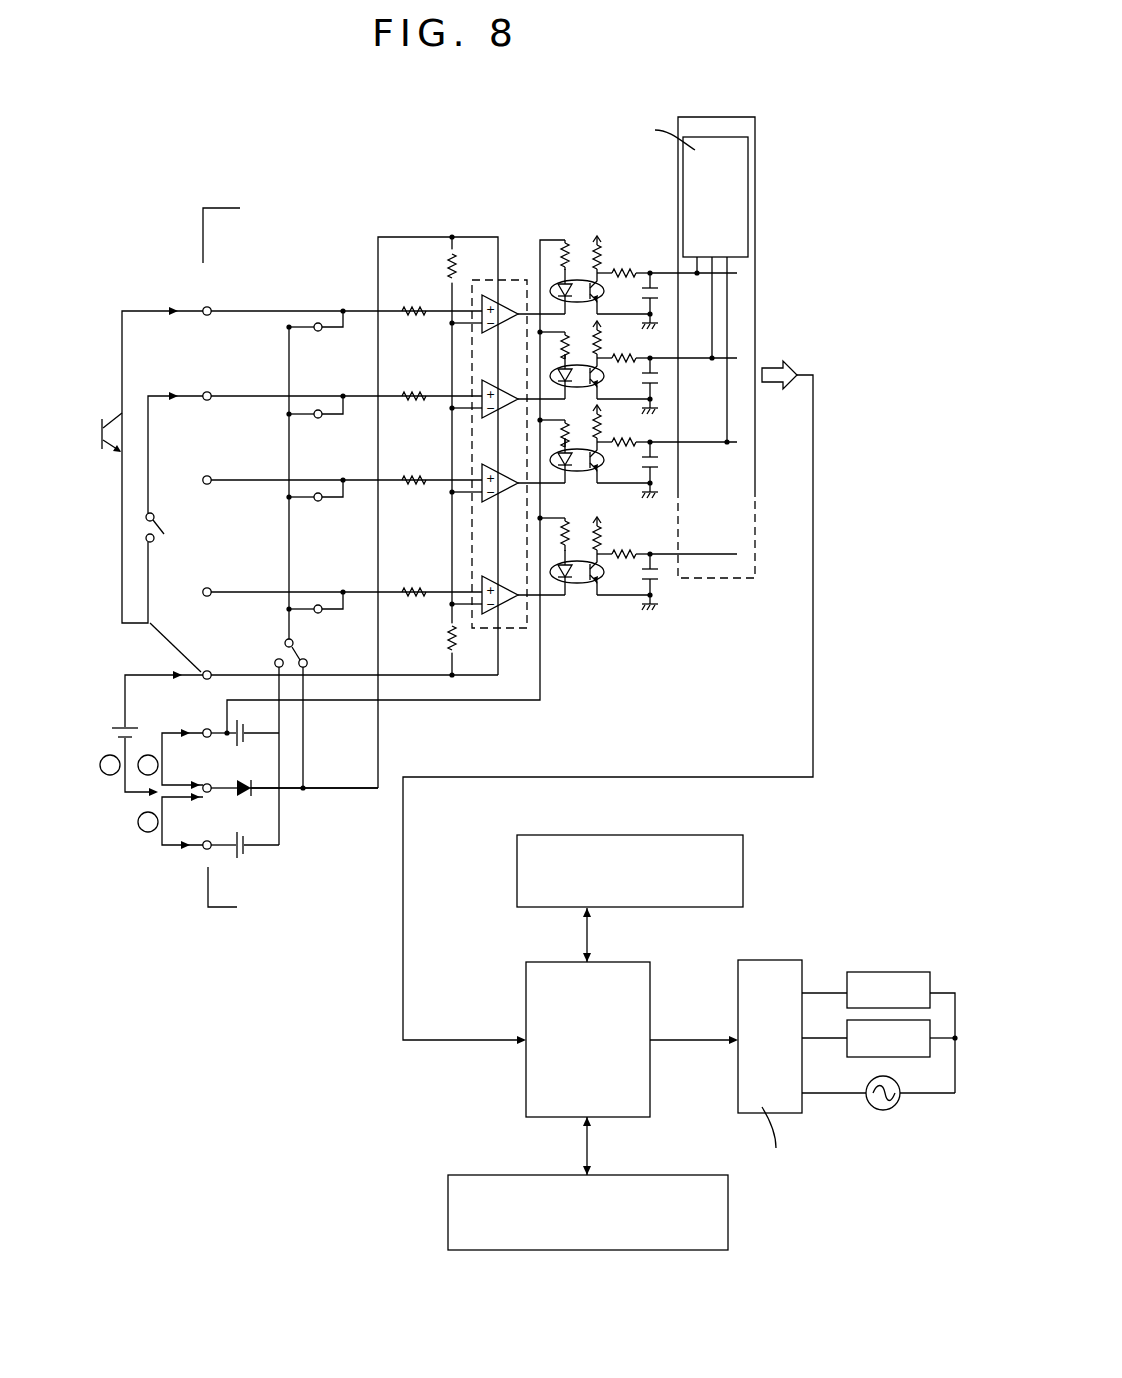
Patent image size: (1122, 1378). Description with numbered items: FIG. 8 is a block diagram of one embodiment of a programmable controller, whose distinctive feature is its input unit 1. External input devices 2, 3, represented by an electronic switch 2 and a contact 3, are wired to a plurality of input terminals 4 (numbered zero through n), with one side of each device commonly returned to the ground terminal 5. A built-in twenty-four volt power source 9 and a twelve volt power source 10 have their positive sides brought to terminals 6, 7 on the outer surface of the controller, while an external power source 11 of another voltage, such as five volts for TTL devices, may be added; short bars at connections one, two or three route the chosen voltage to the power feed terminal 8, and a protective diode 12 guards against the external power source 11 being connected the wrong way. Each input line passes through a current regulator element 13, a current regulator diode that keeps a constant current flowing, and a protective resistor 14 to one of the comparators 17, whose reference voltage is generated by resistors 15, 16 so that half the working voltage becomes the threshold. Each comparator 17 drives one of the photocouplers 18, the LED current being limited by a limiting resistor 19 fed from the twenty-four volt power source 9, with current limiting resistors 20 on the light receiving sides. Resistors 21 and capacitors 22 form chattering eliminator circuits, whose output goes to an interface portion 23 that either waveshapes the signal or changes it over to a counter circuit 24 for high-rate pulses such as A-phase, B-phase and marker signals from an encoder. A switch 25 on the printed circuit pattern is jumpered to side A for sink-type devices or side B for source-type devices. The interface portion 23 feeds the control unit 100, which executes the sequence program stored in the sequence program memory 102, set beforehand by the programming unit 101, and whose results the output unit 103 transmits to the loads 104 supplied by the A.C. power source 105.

The input unit 1 is at (200, 246).
The external input device 2 is at (101, 428).
The external input device 3 is at (140, 509).
The input terminals 4 is at (200, 308).
The 0 V terminal 5 is at (195, 669).
The terminal 6 is at (196, 740).
The terminal 7 is at (200, 851).
The power feed terminal 8 is at (200, 797).
The 24 V power source 9 is at (245, 742).
The 12 V power source 10 is at (250, 858).
The external power source 11 is at (118, 733).
The protective diode 12 is at (250, 800).
The current regulator element 13 is at (301, 318).
The protective resistors 14 is at (392, 236).
The resistor 15 is at (448, 252).
The resistor 16 is at (465, 645).
The comparators 17 is at (520, 276).
The photocouplers 18 is at (576, 262).
The limiting resistors 19 is at (575, 262).
The current limiting resistors 20 is at (606, 262).
The resistors 21 is at (633, 566).
The capacitors 22 is at (658, 613).
The interface portion 23 is at (741, 583).
The counter circuit 24 is at (748, 221).
The switch 25 is at (300, 653).
The control unit 100 is at (527, 975).
The programming unit 101 is at (517, 857).
The sequence program memory 102 is at (448, 1208).
The output unit 103 is at (768, 960).
The loads 104 is at (886, 972).
The A.C. power source 105 is at (888, 1112).